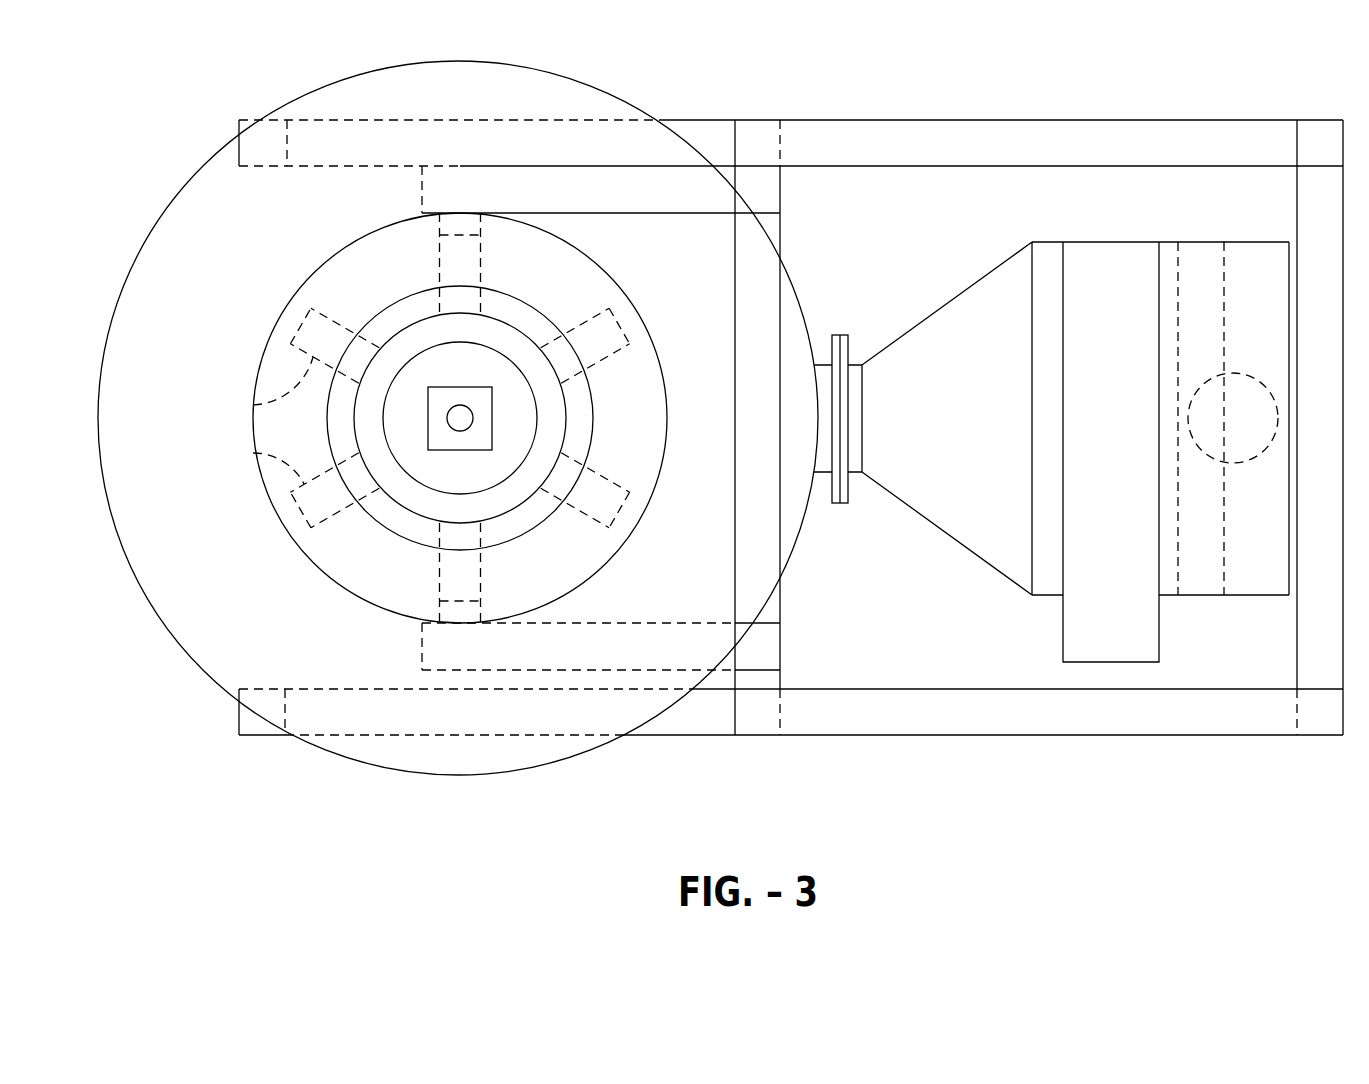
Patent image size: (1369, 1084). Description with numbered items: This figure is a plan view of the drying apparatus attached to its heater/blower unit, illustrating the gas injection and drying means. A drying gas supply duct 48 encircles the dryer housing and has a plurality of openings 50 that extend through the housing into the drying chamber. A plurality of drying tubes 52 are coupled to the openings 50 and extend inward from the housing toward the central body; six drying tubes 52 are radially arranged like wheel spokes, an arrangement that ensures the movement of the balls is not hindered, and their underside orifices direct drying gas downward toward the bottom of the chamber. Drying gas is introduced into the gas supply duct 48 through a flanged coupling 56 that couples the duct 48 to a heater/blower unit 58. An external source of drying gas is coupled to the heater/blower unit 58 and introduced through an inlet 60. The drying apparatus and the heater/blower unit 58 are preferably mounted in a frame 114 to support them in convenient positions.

The drying gas supply duct 48 is at (462, 60).
The openings 50 is at (250, 453).
The drying tubes 52 is at (252, 405).
The flanged coupling 56 is at (840, 334).
The heater/blower unit 58 is at (1092, 236).
The inlet 60 is at (1128, 662).
The frame 114 is at (882, 120).